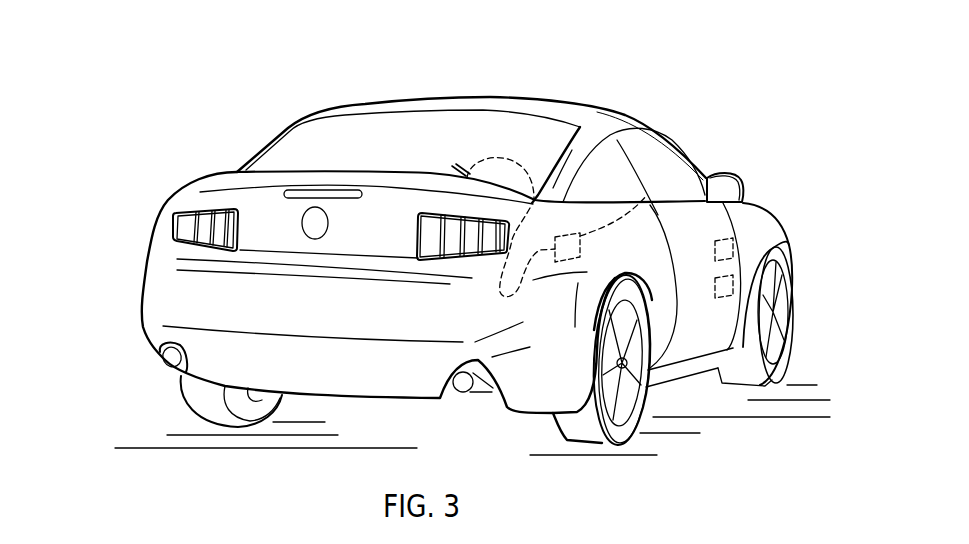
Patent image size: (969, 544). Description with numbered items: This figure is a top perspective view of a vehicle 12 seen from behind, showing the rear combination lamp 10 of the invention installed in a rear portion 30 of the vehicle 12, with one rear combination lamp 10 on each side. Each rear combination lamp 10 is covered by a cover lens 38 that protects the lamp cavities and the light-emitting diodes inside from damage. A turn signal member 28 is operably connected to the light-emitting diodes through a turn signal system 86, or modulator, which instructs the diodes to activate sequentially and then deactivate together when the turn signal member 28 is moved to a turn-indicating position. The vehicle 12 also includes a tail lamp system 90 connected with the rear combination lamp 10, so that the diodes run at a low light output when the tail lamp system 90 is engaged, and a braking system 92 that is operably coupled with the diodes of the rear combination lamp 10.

The rear combination lamp 10 is at (167, 221).
The vehicle 12 is at (567, 103).
The turn signal member 28 is at (455, 164).
The rear portion 30 is at (263, 203).
The cover lens 38 is at (202, 236).
The turn signal system 86 is at (647, 195).
The tail lamp system 90 is at (735, 240).
The braking system 92 is at (737, 278).